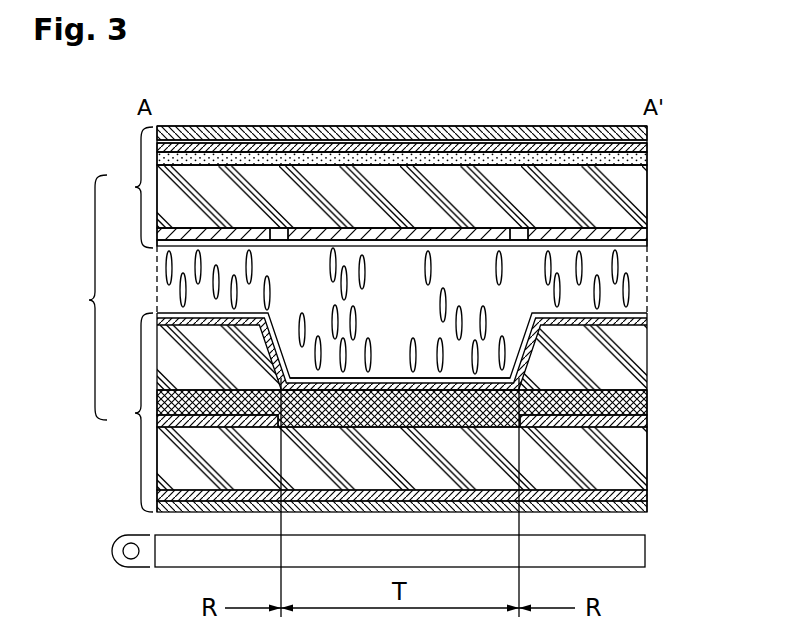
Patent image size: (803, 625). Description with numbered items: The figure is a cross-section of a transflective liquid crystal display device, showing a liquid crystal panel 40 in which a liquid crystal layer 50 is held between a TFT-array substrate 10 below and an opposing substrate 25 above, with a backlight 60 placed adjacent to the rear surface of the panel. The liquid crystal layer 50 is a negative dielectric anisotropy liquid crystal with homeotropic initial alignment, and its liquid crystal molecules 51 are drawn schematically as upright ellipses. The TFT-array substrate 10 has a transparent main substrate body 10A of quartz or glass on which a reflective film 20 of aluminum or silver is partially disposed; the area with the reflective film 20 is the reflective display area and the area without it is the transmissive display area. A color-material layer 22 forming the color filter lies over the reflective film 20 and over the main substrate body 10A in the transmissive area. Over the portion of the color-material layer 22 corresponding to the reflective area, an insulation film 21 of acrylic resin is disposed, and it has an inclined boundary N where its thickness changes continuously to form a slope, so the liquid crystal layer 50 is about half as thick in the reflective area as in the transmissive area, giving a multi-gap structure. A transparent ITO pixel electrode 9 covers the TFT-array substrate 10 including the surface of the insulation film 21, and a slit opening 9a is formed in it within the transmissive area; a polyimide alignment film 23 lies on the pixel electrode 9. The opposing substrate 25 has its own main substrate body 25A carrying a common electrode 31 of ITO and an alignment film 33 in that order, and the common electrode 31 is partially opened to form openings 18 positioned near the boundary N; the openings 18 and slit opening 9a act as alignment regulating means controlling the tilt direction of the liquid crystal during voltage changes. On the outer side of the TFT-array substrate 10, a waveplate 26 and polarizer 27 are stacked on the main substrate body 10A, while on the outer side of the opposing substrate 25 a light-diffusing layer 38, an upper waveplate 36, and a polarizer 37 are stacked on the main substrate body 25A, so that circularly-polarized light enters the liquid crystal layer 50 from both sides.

The polarizer 37 is at (648, 131).
The upper waveplate 36 is at (648, 148).
The light-diffusing layer 38 is at (648, 160).
The main substrate body 25A is at (638, 187).
The common electrode 31 is at (648, 234).
The openings 18 is at (278, 241).
The alignment film 33 is at (652, 243).
The liquid crystal layer 50 is at (638, 256).
The liquid crystal molecules 51 is at (630, 283).
The alignment film 23 is at (648, 316).
The pixel electrode 9 is at (647, 323).
The slit opening 9a is at (398, 388).
The inclined boundary N is at (518, 333).
The insulation film 21 is at (635, 358).
The color-material layer 22 is at (648, 400).
The reflective film 20 is at (648, 422).
The main substrate body 10A is at (640, 463).
The waveplate 26 is at (648, 497).
The polarizer 27 is at (648, 508).
The backlight 60 is at (633, 555).
The opposing substrate 25 is at (130, 187).
The liquid crystal panel 40 is at (84, 297).
The TFT-array substrate 10 is at (130, 412).